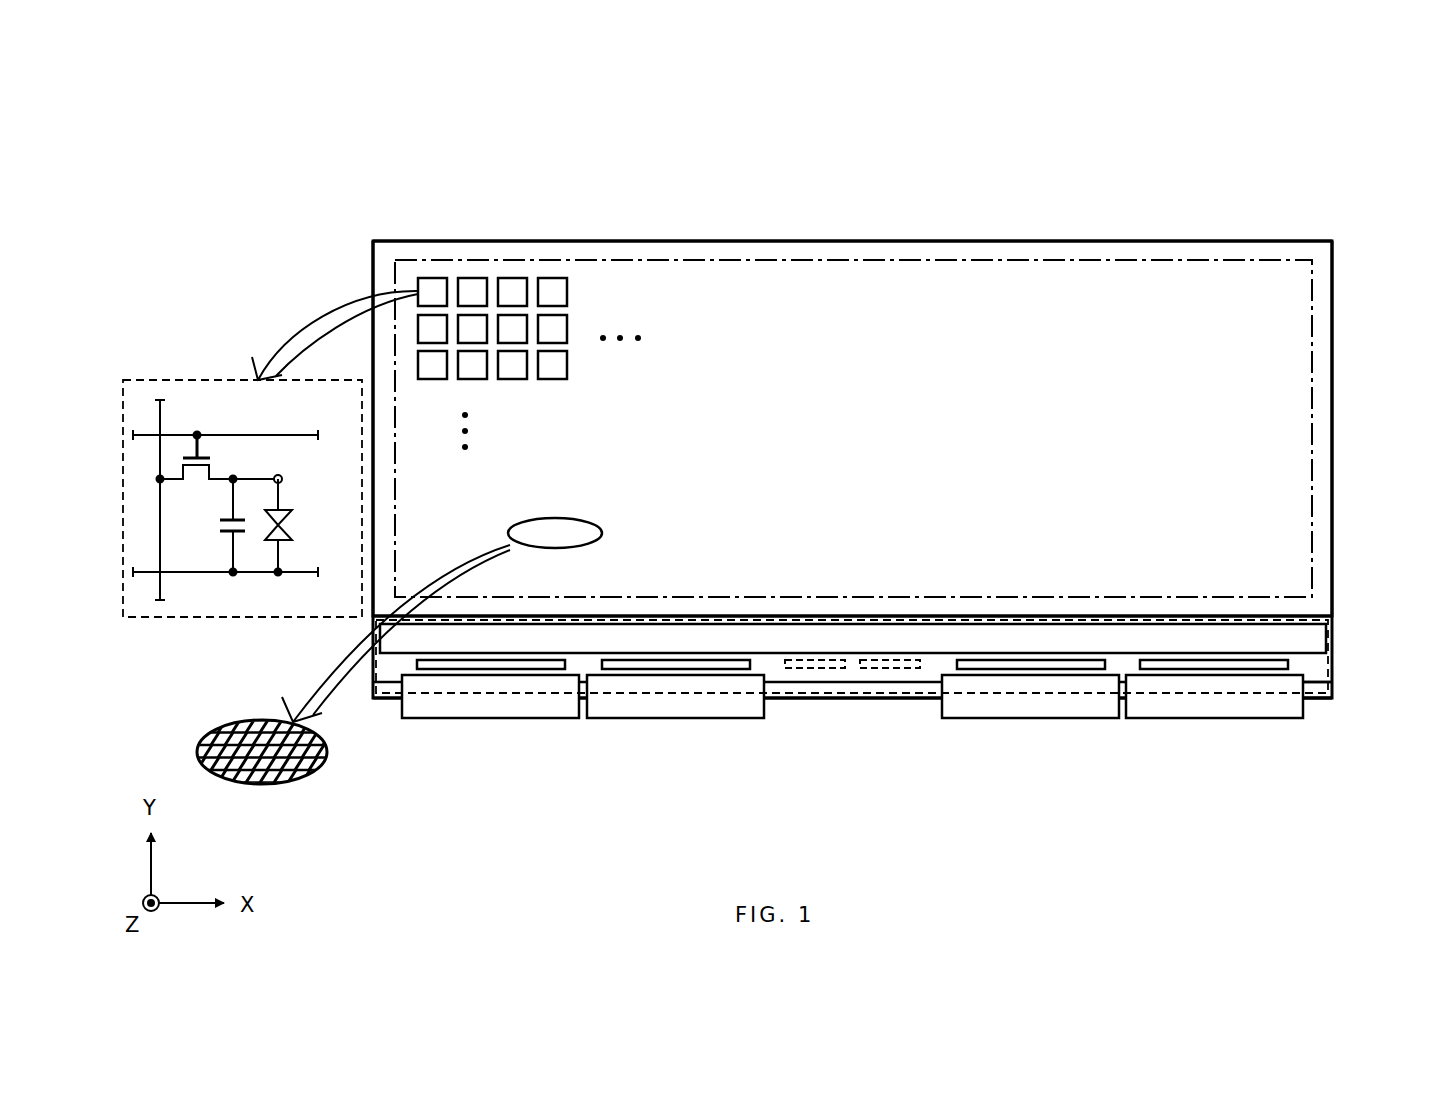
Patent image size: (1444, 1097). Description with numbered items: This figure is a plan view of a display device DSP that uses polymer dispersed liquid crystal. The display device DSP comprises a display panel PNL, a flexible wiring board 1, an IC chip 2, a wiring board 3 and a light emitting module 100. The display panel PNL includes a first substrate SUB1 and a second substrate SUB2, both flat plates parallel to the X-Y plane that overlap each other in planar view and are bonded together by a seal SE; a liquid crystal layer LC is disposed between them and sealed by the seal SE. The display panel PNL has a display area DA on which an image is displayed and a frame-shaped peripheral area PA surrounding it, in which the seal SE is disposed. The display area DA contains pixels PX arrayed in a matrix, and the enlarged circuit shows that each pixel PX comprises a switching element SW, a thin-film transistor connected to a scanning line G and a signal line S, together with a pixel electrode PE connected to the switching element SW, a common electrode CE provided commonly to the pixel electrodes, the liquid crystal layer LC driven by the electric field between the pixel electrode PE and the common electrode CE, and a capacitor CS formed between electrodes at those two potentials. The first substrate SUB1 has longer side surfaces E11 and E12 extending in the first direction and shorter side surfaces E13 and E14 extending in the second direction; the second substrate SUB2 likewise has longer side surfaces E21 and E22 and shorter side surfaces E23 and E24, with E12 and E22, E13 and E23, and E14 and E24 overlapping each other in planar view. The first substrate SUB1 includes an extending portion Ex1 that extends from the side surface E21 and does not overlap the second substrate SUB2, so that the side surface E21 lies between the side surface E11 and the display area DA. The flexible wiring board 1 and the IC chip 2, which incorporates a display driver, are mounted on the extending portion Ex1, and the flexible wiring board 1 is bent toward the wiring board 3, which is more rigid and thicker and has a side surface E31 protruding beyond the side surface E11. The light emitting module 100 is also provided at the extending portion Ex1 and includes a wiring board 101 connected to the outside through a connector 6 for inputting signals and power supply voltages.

The display device DSP is at (1312, 147).
The display panel PNL is at (1298, 241).
The first substrate SUB1 is at (899, 719).
The second substrate SUB2 is at (1333, 372).
The display area DA is at (1286, 424).
The peripheral area PA is at (1323, 460).
The seal SE is at (1323, 500).
The liquid crystal layer LC is at (1288, 545).
The pixel PX is at (510, 278).
The scanning line G is at (170, 435).
The signal line S is at (160, 517).
The switching element SW is at (223, 467).
The pixel electrode PE is at (282, 479).
The common electrode CE is at (297, 575).
The capacitor CS is at (217, 527).
The side surface E11 is at (893, 689).
The side surface E21 is at (938, 625).
The side surface E31 is at (917, 703).
The side surface E12 is at (852, 199).
The side surface E22 is at (1069, 238).
The side surface E13 is at (296, 410).
The side surface E23 is at (371, 256).
The side surface E14 is at (1388, 428).
The side surface E24 is at (1340, 325).
The extending portion Ex1 is at (813, 678).
The flexible wiring board 1 is at (1188, 750).
The IC chip 2 is at (1227, 740).
The wiring board 3 is at (1317, 697).
The connector 6 is at (823, 668).
The light emitting module 100 is at (780, 643).
The wiring board 101 is at (1327, 703).